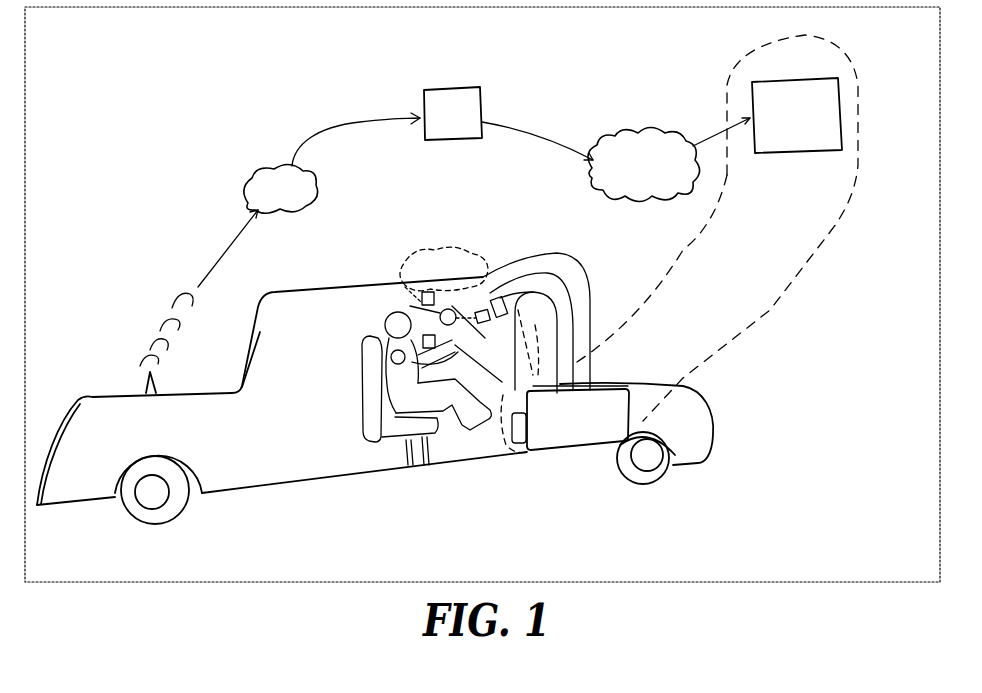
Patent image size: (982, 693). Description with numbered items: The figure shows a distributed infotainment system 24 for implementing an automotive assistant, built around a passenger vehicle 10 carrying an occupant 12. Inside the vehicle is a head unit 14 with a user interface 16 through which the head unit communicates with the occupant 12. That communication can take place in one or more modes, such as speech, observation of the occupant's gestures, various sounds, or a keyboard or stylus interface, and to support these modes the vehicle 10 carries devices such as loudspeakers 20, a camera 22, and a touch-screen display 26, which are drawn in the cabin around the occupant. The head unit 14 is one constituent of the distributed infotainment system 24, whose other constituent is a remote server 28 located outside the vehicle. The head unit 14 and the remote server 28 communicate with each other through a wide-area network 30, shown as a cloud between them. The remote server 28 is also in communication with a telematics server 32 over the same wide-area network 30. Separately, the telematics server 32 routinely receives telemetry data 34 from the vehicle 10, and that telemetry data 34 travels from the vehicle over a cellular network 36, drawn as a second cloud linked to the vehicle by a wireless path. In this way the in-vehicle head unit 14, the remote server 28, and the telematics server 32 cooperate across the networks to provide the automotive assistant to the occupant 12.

The passenger vehicle 10 is at (103, 440).
The occupant 12 is at (472, 440).
The head unit 14 is at (570, 418).
The user interface 16 is at (468, 258).
The loudspeakers 20 is at (444, 269).
The camera 22 is at (456, 334).
The distributed infotainment system 24 is at (522, 453).
The touch-screen display 26 is at (838, 222).
The remote server 28 is at (806, 133).
The wide-area network 30 is at (651, 180).
The telematics server 32 is at (460, 130).
The telemetry data 34 is at (226, 250).
The cellular network 36 is at (281, 188).